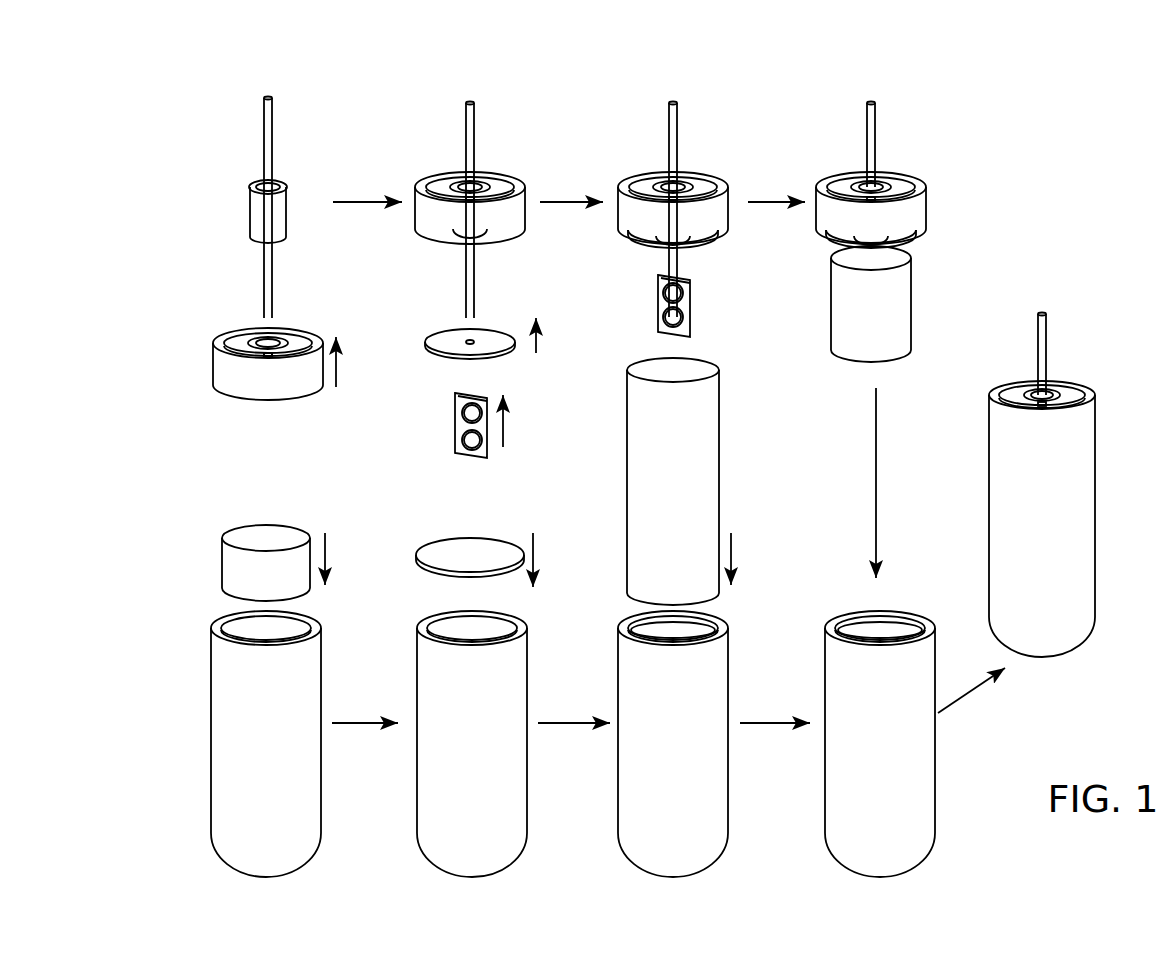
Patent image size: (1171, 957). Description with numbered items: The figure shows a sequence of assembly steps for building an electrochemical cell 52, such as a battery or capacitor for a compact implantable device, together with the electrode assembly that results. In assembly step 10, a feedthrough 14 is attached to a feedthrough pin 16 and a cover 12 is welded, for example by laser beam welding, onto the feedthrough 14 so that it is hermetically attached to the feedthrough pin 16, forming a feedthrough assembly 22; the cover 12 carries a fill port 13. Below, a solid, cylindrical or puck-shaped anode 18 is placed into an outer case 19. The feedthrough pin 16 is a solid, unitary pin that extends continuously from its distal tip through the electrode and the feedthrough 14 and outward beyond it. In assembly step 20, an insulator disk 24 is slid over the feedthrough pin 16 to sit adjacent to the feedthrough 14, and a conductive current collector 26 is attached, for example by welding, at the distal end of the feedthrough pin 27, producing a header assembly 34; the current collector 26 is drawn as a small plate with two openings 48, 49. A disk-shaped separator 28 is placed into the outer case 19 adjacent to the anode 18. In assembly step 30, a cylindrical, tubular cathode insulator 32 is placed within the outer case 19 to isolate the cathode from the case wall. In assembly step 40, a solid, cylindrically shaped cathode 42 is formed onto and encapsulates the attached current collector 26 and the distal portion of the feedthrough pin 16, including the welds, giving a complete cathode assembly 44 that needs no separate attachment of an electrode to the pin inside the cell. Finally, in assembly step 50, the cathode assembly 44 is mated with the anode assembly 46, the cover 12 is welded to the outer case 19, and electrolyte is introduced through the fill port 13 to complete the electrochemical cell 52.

The assembly step 10 is at (281, 77).
The cover 12 is at (312, 334).
The fill port 13 is at (264, 358).
The feedthrough 14 is at (286, 221).
The feedthrough pin 16 is at (272, 149).
The anode 18 is at (222, 560).
The outer case 19 is at (322, 808).
The assembly step 20 is at (483, 77).
The feedthrough assembly 22 is at (498, 148).
The insulator disk 24 is at (505, 331).
The current collector 26 is at (476, 439).
The distal end of the feedthrough pin 27 is at (703, 273).
The separator 28 is at (418, 563).
The assembly step 30 is at (686, 77).
The cathode insulator 32 is at (721, 513).
The header assembly 34 is at (692, 148).
The assembly step 40 is at (884, 77).
The cathode 42 is at (912, 315).
The cathode assembly 44 is at (938, 355).
The anode assembly 46 is at (935, 808).
The upper hole 48 is at (455, 446).
The lower hole 49 is at (488, 455).
The assembly step 50 is at (1055, 284).
The electrochemical cell 52 is at (1112, 472).